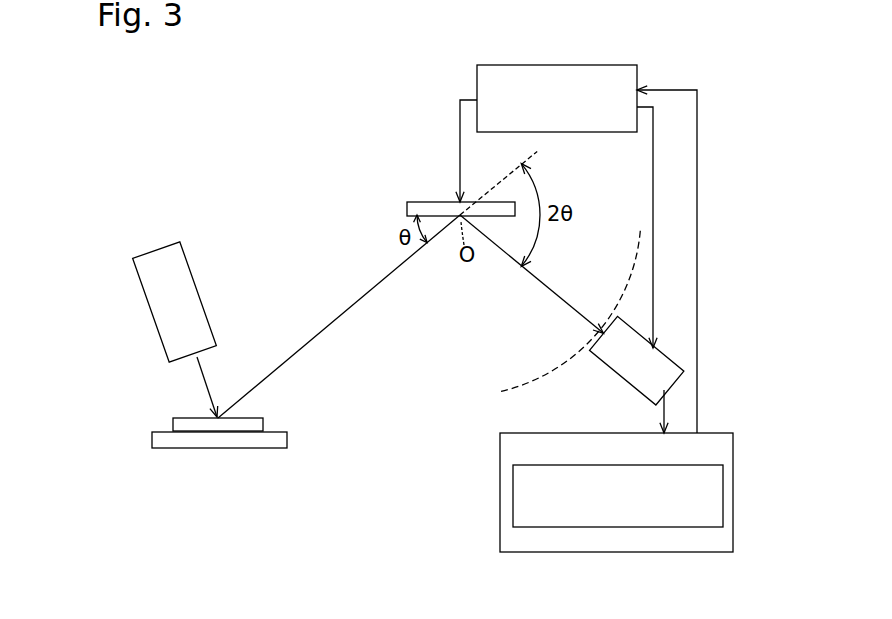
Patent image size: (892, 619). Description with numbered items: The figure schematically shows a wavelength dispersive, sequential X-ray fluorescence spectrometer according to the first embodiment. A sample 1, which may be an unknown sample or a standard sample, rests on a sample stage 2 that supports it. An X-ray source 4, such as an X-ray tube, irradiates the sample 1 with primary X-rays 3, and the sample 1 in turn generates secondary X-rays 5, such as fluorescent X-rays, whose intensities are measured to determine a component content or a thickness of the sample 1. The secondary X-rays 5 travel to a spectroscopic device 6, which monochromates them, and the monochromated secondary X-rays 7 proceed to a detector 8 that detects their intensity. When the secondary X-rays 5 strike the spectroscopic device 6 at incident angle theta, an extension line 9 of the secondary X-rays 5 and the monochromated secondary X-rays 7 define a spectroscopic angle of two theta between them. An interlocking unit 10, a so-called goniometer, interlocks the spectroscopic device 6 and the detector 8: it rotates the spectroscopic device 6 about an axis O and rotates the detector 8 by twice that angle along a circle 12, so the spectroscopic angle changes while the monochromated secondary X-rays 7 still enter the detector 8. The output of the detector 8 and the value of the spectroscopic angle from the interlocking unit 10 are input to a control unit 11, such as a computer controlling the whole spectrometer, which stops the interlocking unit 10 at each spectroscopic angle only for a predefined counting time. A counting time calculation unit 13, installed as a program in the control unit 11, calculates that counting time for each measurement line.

The sample 1 is at (263, 427).
The sample stage 2 is at (287, 440).
The primary X-rays 3 is at (202, 373).
The X-ray source 4 is at (198, 292).
The secondary X-rays 5 is at (350, 310).
The spectroscopic device 6 is at (443, 200).
The monochromated secondary X-rays 7 is at (543, 283).
The detector 8 is at (620, 380).
The extension line 9 is at (535, 161).
The interlocking unit 10 is at (593, 131).
The control unit 11 is at (733, 478).
The circle 12 is at (560, 367).
The counting time calculation unit 13 is at (500, 478).